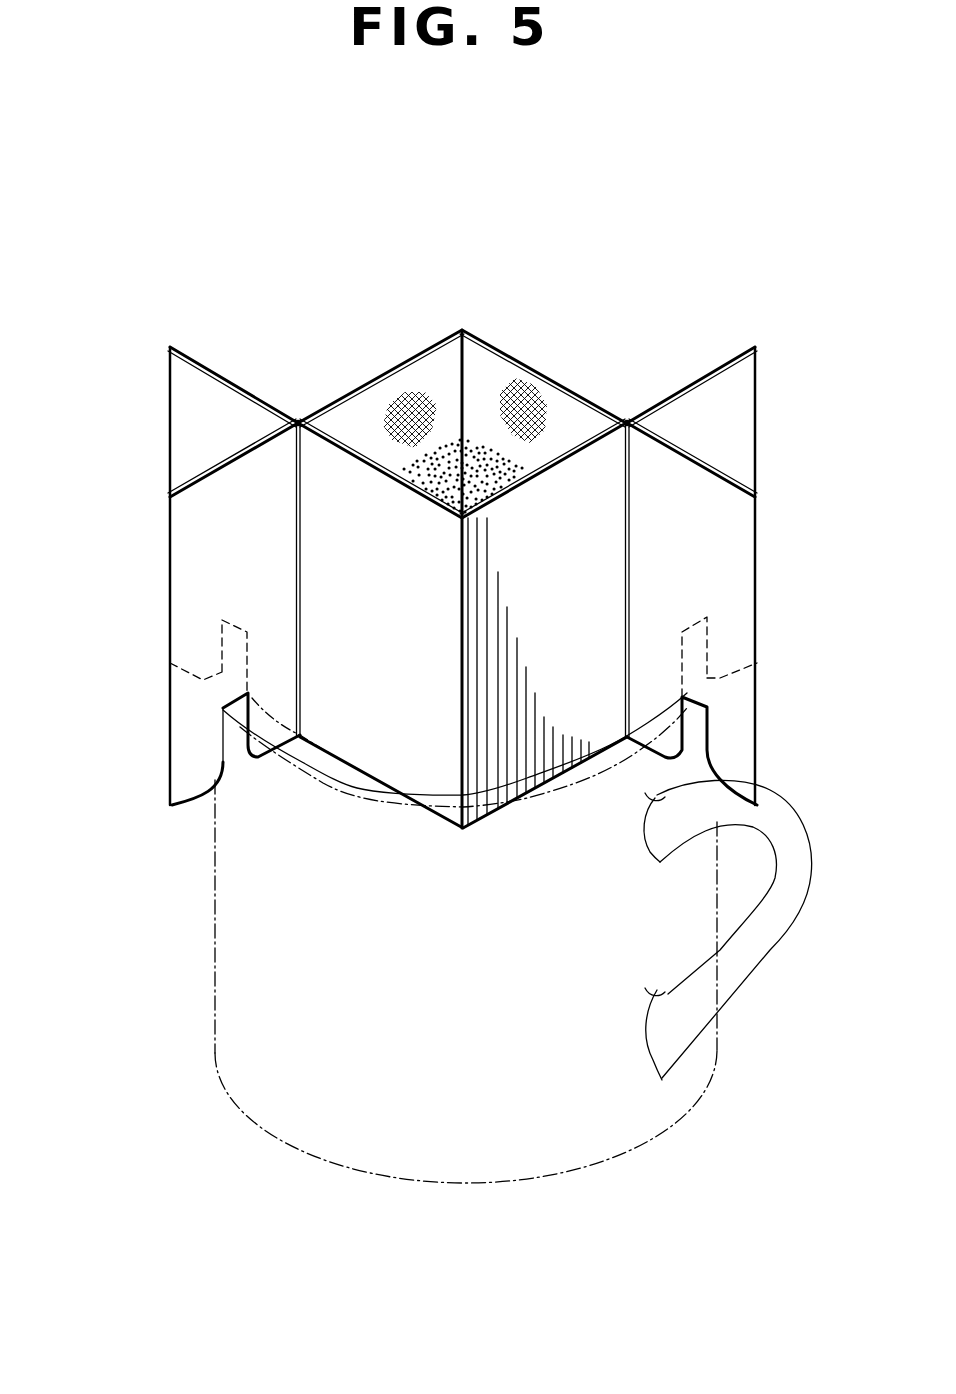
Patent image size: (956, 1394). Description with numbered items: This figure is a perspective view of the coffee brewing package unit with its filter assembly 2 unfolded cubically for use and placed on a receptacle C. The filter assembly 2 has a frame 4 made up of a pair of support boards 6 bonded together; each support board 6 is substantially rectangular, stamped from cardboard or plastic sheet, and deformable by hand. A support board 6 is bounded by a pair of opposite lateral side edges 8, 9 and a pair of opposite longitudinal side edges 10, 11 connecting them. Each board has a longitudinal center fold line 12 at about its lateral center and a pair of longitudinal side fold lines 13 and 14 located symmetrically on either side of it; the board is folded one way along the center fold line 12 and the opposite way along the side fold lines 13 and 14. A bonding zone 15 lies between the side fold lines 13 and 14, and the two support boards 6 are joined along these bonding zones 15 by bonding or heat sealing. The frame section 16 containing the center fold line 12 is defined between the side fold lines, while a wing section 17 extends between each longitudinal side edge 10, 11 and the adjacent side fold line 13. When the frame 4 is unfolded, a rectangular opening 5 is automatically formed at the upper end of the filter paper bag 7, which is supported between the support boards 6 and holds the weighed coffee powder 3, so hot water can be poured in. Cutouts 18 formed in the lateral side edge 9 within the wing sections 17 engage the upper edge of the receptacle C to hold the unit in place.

The filter assembly 2 is at (481, 324).
The coffee powder 3 is at (473, 453).
The frame 4 is at (347, 395).
The rectangular opening 5 is at (388, 400).
The support board 6 is at (413, 349).
The filter paper bag 7 is at (565, 412).
The lateral side edge 8 is at (500, 352).
The lateral side edge 9 is at (460, 829).
The longitudinal side edge 10 is at (170, 443).
The longitudinal side edge 11 is at (757, 438).
The center fold line 12 is at (460, 727).
The side fold line 13 is at (298, 540).
The side fold line 14 is at (300, 576).
The bonding zone 15 is at (297, 418).
The frame section 16 is at (440, 343).
The wing section 17 is at (203, 408).
The cutout 18 is at (233, 737).
The receptacle C is at (215, 947).